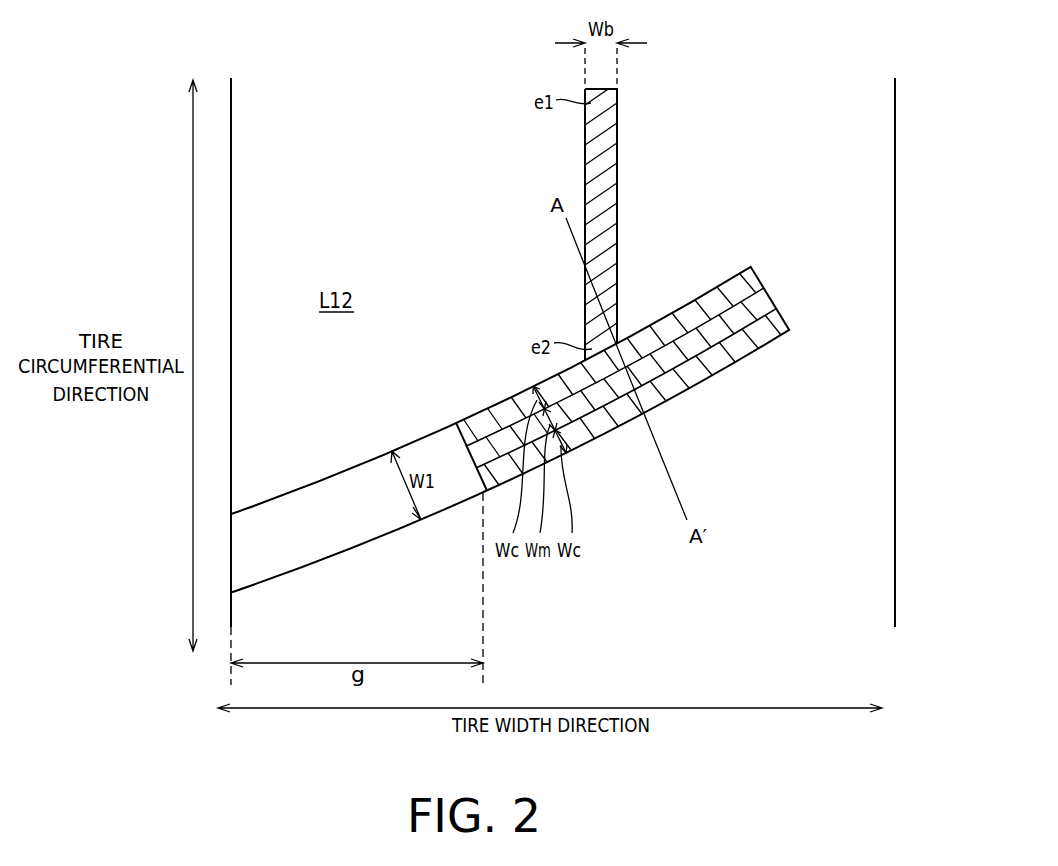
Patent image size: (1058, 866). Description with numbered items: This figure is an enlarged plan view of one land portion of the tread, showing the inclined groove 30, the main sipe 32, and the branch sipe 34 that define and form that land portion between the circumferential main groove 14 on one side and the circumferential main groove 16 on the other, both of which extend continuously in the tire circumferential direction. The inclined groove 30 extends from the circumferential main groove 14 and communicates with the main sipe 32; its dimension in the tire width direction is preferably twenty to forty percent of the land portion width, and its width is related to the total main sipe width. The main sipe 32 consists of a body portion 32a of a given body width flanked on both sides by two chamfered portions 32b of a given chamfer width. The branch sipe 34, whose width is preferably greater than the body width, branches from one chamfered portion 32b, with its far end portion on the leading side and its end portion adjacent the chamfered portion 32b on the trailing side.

The circumferential main groove 14 is at (201, 378).
The circumferential main groove 16 is at (911, 378).
The inclined groove 30 is at (363, 533).
The main sipe 32 is at (668, 366).
The body portion 32a is at (758, 300).
The chamfered portion 32b is at (751, 282).
The branch sipe 34 is at (611, 161).